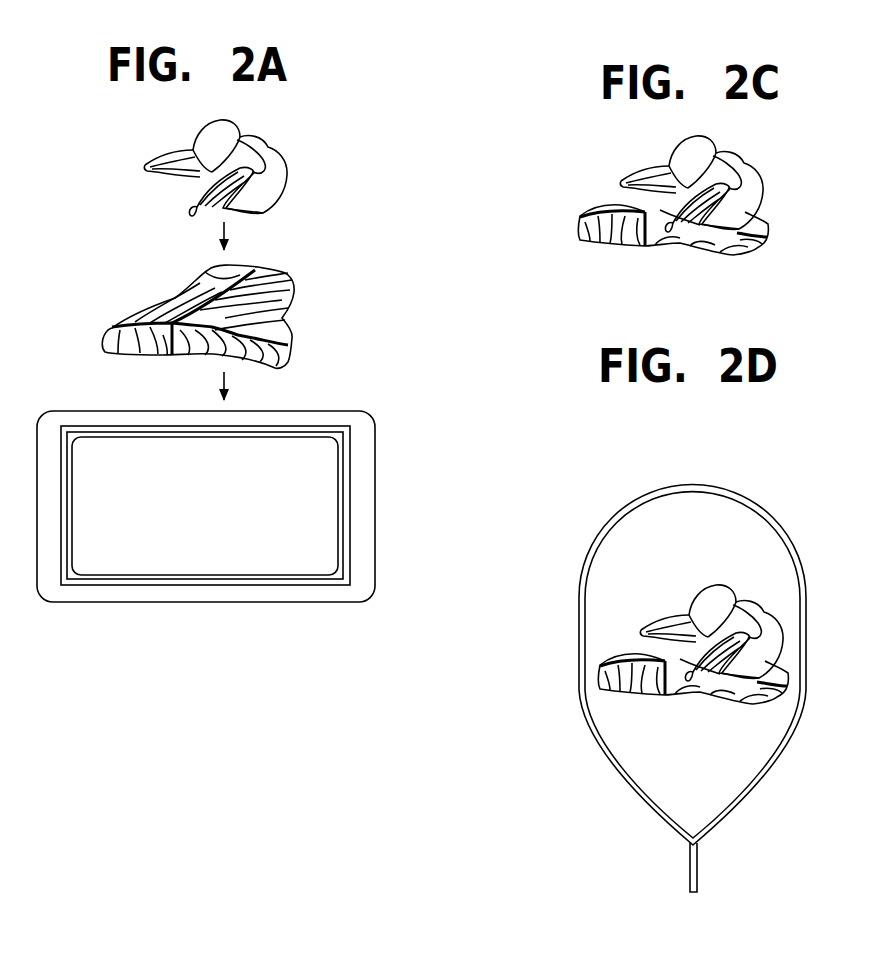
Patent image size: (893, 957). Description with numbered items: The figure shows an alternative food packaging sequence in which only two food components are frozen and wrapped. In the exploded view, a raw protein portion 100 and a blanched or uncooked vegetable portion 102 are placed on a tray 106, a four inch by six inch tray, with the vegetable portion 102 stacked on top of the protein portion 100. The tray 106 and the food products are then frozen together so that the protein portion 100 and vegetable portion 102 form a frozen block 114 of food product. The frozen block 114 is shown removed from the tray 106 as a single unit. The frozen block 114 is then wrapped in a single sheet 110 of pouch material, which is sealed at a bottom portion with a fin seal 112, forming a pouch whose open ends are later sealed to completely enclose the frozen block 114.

In FIG. 2A, the vegetable portion 102 is at (148, 163).
In FIG. 2A, the raw protein portion 100 is at (148, 312).
In FIG. 2A, the tray 106 is at (375, 500).
In FIG. 2C, the frozen block 114 is at (618, 172).
In FIG. 2D, the frozen block 114 is at (668, 606).
In FIG. 2D, the single sheet 110 is at (606, 515).
In FIG. 2D, the fin seal 112 is at (698, 868).